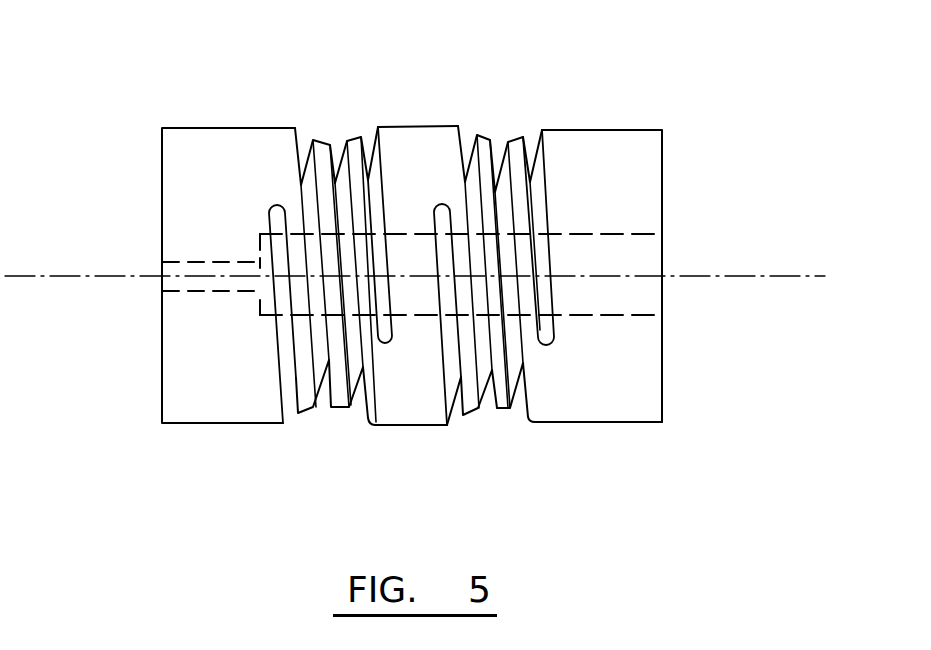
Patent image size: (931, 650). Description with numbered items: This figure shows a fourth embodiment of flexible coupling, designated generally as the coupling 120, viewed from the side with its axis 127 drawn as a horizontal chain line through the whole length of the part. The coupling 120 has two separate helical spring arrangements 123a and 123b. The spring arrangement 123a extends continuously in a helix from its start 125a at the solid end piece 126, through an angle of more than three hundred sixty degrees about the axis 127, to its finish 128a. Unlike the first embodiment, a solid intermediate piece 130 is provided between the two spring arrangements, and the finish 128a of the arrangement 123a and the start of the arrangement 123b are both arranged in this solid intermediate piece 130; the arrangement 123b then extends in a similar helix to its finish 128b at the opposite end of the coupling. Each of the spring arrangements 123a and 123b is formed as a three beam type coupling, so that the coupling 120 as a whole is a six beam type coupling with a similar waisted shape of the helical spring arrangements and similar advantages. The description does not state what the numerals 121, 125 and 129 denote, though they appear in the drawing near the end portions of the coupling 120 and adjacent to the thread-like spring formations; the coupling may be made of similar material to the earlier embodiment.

The flexible coupling 120 is at (641, 114).
The pin member 121 is at (645, 343).
The helical spring arrangement 123a is at (323, 163).
The helical spring arrangement 123b is at (515, 145).
The thread crest loop 125 is at (438, 215).
The start of spring arrangement 125a is at (276, 216).
The solid end piece 126 is at (203, 388).
The axis 127 is at (745, 268).
The finish of spring arrangement 128a is at (384, 343).
The finish of spring arrangement 128b is at (553, 337).
The end portion 129 is at (583, 398).
The solid intermediate piece 130 is at (423, 400).